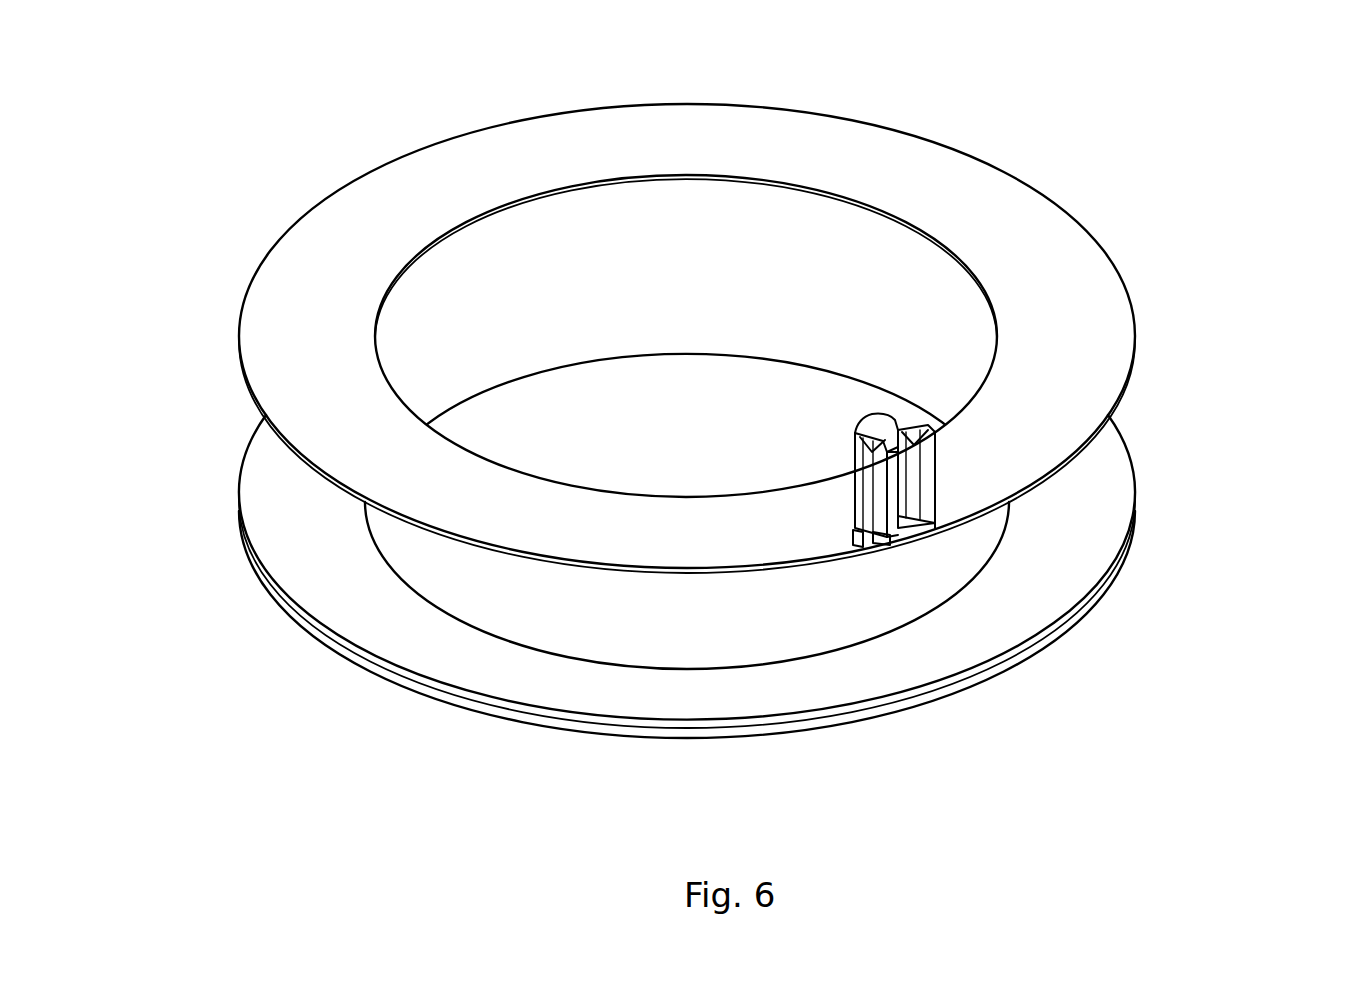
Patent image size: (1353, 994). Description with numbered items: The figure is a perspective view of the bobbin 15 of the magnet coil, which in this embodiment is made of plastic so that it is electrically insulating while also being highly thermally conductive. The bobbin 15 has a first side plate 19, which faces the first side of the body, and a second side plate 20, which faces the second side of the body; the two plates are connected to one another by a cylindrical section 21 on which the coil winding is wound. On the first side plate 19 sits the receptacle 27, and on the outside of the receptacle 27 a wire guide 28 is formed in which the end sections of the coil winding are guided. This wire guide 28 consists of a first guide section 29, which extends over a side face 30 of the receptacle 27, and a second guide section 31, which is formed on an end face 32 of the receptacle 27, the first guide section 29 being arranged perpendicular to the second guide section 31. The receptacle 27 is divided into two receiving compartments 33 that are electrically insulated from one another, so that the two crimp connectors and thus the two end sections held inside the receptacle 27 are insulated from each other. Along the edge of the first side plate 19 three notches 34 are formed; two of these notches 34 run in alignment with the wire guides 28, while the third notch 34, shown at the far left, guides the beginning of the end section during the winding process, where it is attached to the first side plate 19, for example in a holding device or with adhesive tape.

The bobbin 15 is at (294, 174).
The first side plate 19 is at (1082, 352).
The second side plate 20 is at (1090, 535).
The cylindrical section 21 is at (460, 563).
The receptacle 27 is at (880, 415).
The wire guide 28 is at (742, 283).
The first guide section 29 is at (850, 447).
The side face 30 is at (910, 505).
The second guide section 31 is at (1111, 460).
The end face 32 is at (937, 430).
The receiving compartments 33 is at (862, 427).
The notches 34 is at (887, 537).